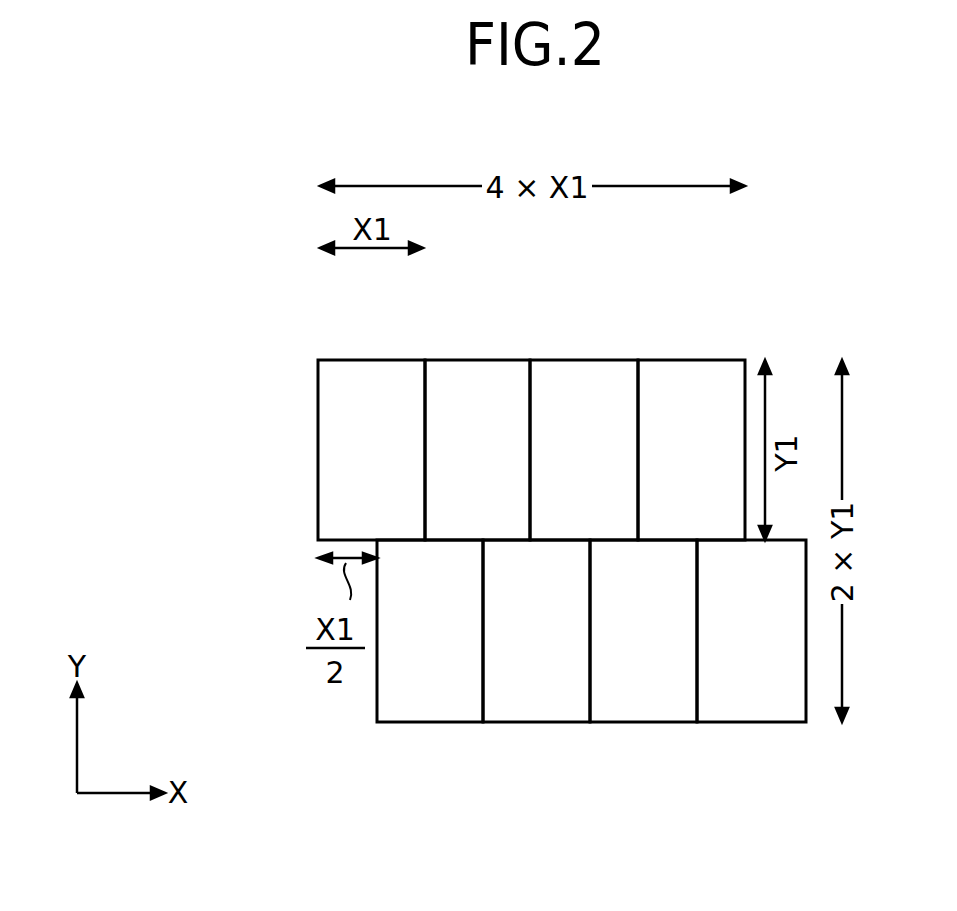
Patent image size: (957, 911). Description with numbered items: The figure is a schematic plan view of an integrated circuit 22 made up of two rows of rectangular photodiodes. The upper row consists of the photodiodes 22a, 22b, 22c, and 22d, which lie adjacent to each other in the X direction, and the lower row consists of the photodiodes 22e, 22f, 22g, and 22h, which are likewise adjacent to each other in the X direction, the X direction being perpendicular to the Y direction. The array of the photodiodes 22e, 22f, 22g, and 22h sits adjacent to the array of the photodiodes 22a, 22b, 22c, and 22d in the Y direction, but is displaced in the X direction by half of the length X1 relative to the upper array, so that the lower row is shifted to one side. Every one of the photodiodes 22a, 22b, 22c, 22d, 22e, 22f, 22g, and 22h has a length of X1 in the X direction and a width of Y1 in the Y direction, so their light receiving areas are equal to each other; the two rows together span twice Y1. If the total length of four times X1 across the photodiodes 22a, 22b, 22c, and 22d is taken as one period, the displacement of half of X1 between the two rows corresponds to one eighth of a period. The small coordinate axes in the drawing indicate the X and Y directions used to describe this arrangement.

The integrated circuit 22 is at (720, 357).
The photodiode 22a is at (377, 360).
The photodiode 22b is at (484, 360).
The photodiode 22c is at (589, 360).
The photodiode 22d is at (700, 360).
The photodiode 22e is at (428, 724).
The photodiode 22f is at (535, 724).
The photodiode 22g is at (640, 724).
The photodiode 22h is at (746, 724).